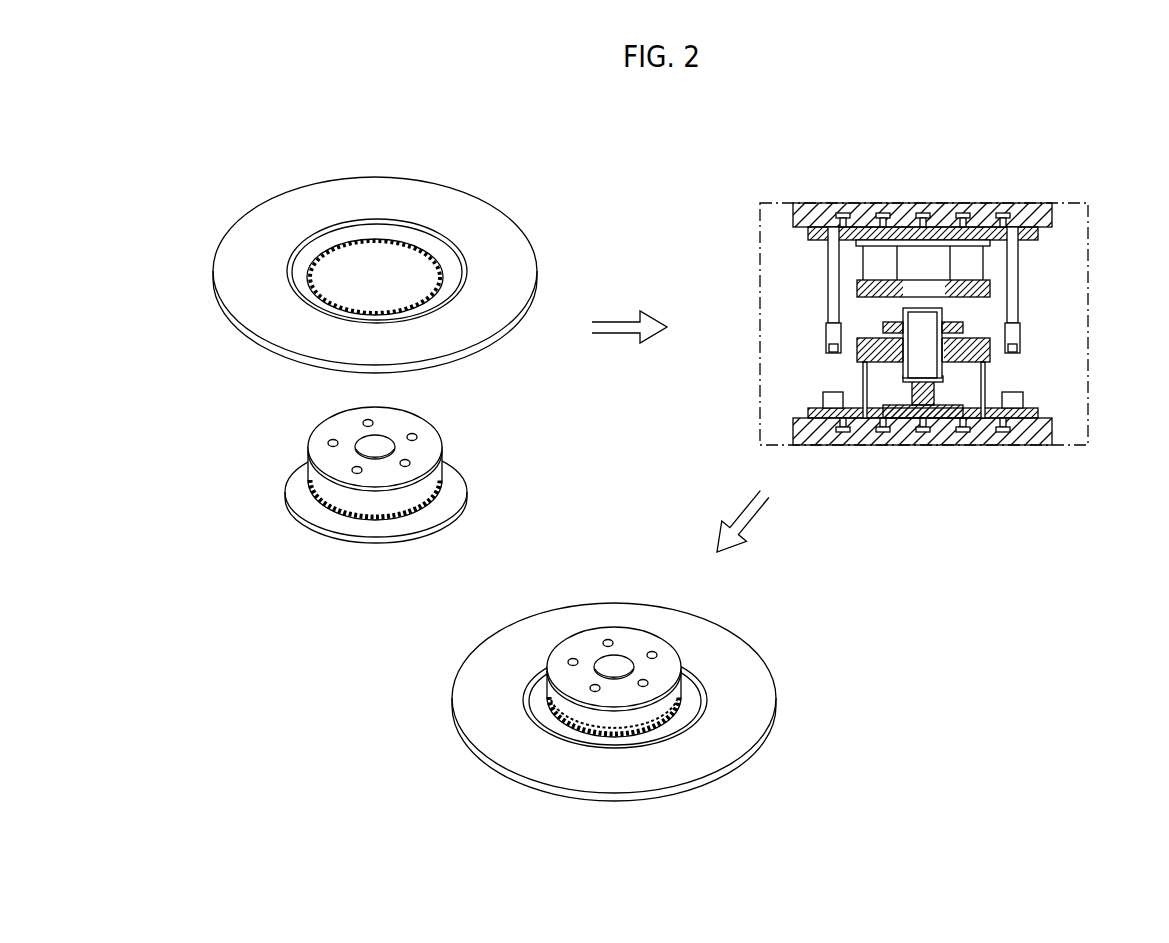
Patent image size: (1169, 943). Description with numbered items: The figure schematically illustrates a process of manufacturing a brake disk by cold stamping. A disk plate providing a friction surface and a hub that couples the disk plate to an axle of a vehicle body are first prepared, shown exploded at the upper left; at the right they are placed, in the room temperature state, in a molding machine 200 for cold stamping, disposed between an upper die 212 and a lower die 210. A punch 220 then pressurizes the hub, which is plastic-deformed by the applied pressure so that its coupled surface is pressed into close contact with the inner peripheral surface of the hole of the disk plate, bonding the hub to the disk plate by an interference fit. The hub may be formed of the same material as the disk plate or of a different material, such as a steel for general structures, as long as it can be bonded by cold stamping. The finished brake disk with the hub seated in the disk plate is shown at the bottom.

The molding machine 200 is at (785, 264).
The lower die 210 is at (1020, 340).
The upper die 212 is at (857, 288).
The punch 220 is at (915, 372).